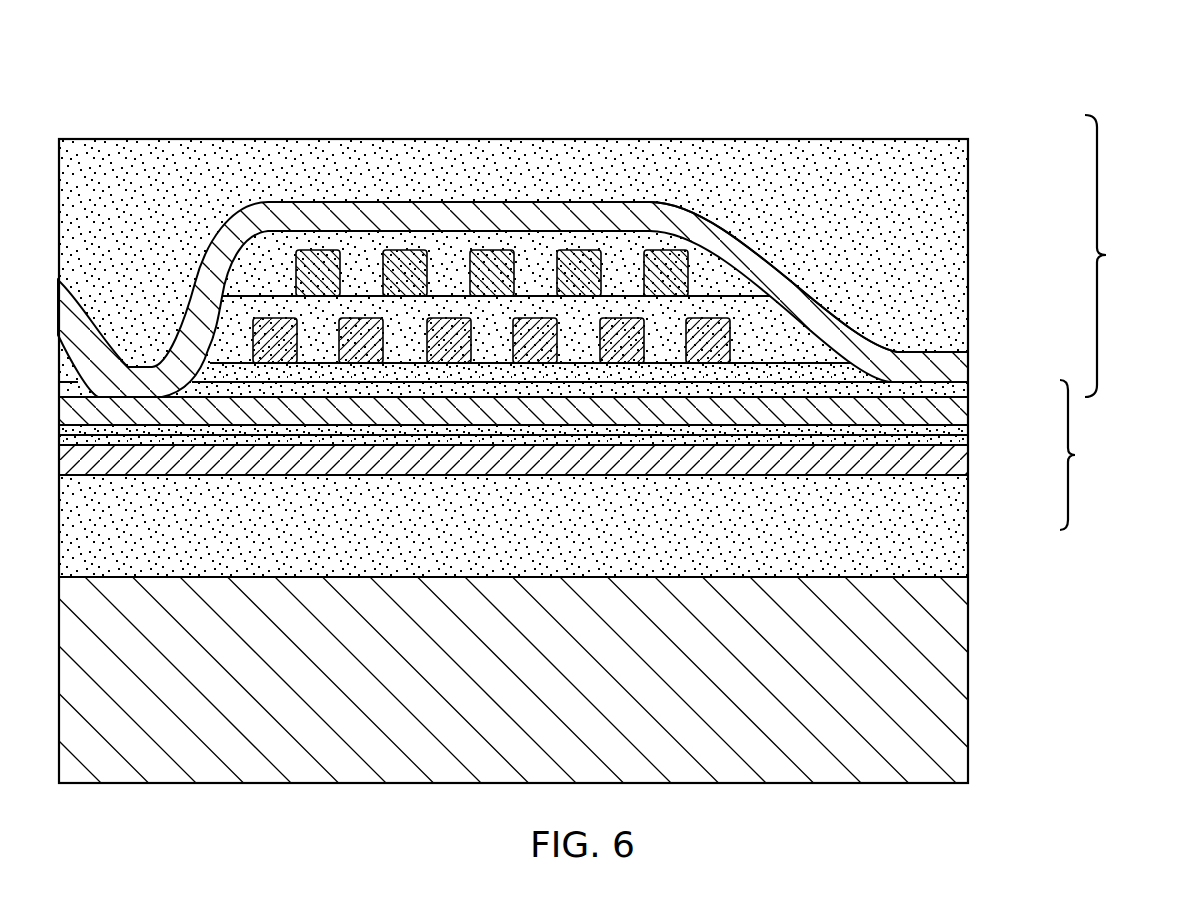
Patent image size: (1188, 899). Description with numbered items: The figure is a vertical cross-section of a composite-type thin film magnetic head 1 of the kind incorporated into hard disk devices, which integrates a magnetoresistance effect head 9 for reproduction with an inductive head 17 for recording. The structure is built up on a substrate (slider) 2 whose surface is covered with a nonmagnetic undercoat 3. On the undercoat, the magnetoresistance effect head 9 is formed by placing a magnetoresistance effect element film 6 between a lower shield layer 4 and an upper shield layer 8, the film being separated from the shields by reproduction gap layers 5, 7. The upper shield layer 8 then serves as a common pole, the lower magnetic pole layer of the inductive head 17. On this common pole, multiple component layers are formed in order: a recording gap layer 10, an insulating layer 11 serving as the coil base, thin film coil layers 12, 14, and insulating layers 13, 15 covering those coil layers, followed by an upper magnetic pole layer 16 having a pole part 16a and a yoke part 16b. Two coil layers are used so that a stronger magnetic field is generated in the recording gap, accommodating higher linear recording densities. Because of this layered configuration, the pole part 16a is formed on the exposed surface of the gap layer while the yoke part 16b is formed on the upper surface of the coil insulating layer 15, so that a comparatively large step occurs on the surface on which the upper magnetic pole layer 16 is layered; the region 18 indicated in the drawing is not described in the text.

The thin film magnetic head 1 is at (950, 48).
The substrate 2 is at (968, 680).
The nonmagnetic undercoat 3 is at (970, 550).
The lower shield layer 4 is at (970, 463).
The reproduction gap layer 5 is at (970, 452).
The magnetoresistance effect element film 6 is at (970, 438).
The reproduction gap layer 7 is at (970, 426).
The upper shield layer 8 is at (950, 408).
The magnetoresistance effect head 9 is at (1078, 455).
The recording gap layer 10 is at (970, 381).
The insulating layer 11 is at (845, 372).
The coil layer 12 is at (730, 340).
The insulating layer 13 is at (780, 306).
The coil layer 14 is at (690, 285).
The insulating layer 15 is at (773, 250).
The upper magnetic pole layer 16 is at (968, 141).
The pole part 16a is at (968, 360).
The yoke part 16b is at (483, 215).
The inductive head 17 is at (1113, 256).
The recess 18 is at (798, 158).